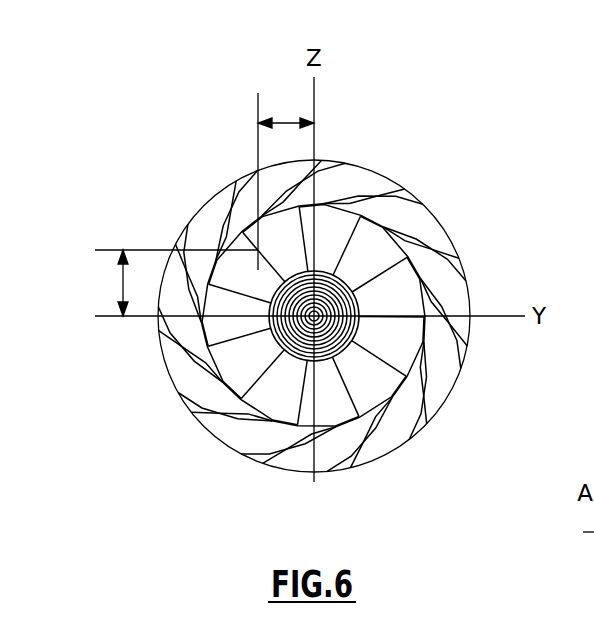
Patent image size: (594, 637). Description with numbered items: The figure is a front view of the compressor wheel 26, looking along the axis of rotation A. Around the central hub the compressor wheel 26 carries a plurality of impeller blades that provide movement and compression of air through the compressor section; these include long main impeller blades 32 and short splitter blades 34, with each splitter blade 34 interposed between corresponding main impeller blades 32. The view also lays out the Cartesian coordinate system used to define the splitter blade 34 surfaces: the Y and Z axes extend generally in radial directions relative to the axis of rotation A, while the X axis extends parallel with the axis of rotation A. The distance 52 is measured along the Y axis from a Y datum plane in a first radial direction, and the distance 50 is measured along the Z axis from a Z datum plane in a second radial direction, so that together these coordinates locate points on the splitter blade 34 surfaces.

The compressor wheel 26 is at (482, 162).
The main impeller blades 32 is at (353, 446).
The splitter blades 34 is at (366, 441).
The distance along the Z axis 50 is at (120, 284).
The distance along the Y axis 52 is at (291, 118).
The axis of rotation A is at (282, 345).